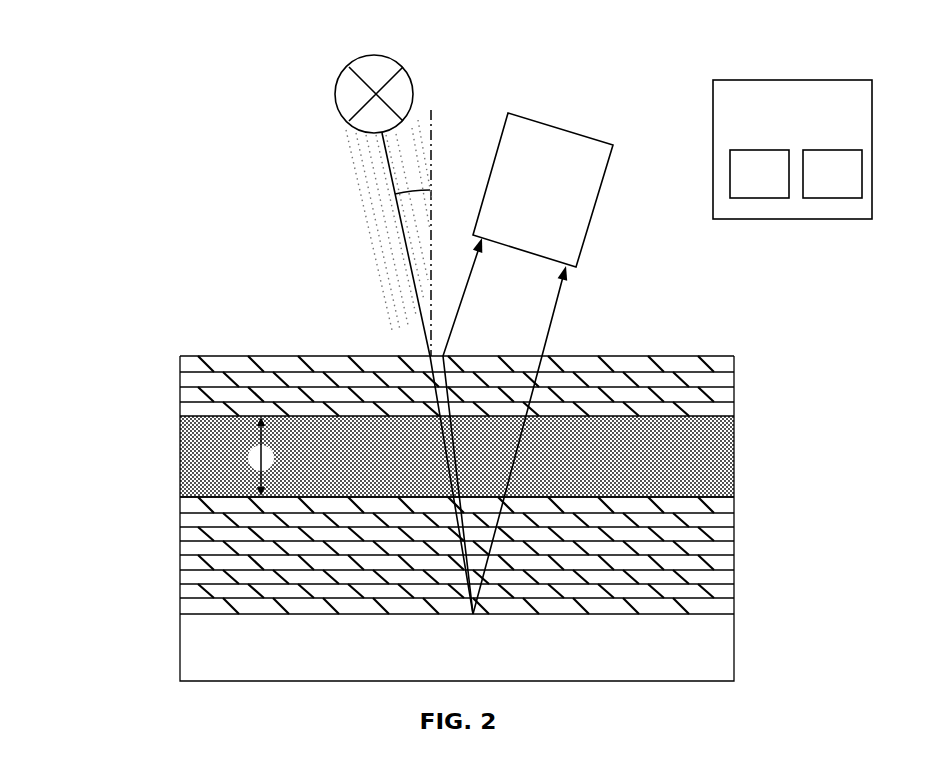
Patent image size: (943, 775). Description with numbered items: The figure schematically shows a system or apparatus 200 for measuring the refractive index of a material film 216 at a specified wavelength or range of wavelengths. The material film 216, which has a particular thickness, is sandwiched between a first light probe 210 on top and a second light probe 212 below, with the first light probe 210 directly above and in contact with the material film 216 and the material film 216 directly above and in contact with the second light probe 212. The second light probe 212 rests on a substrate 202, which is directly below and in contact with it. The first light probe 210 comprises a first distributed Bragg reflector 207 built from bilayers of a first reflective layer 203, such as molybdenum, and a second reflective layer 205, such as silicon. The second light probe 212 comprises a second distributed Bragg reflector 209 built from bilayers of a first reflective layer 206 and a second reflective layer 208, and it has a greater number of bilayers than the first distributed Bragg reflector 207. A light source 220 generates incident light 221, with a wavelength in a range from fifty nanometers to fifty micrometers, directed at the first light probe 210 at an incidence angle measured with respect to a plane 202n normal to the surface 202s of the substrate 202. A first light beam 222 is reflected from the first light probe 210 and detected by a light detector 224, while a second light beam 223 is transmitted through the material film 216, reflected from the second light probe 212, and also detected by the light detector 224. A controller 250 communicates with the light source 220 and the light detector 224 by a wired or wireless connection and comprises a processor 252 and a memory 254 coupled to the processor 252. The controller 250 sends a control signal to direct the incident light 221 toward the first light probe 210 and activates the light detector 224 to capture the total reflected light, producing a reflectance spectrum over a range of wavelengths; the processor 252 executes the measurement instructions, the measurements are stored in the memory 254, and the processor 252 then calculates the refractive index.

The system or apparatus 200 is at (153, 61).
The substrate 202 is at (434, 660).
The plane normal to the surface 202n is at (433, 114).
The surface of the substrate 202s is at (660, 614).
The first reflective layer 203 is at (180, 408).
The second reflective layer 205 is at (180, 398).
The first reflective layer 206 is at (734, 605).
The first distributed Bragg reflector 207 is at (82, 375).
The second reflective layer 208 is at (734, 588).
The second distributed Bragg reflector 209 is at (853, 550).
The first light probe 210 is at (742, 358).
The second light probe 212 is at (170, 498).
The material film 216 is at (180, 486).
The light source 220 is at (335, 95).
The incident light 221 is at (402, 256).
The first light beam 222 is at (455, 327).
The second light beam 223 is at (542, 345).
The light detector 224 is at (575, 182).
The controller 250 is at (771, 130).
The processor 252 is at (739, 190).
The memory 254 is at (811, 190).